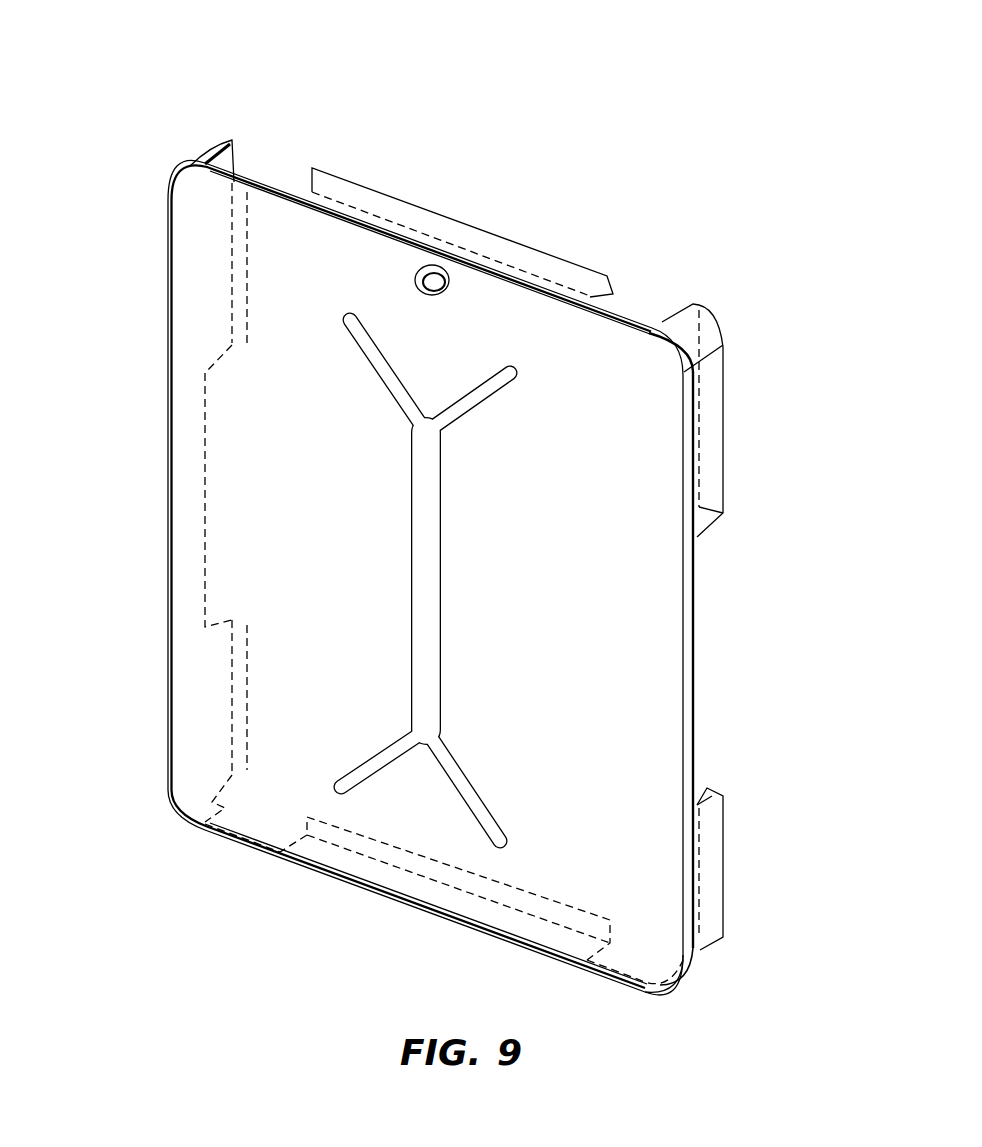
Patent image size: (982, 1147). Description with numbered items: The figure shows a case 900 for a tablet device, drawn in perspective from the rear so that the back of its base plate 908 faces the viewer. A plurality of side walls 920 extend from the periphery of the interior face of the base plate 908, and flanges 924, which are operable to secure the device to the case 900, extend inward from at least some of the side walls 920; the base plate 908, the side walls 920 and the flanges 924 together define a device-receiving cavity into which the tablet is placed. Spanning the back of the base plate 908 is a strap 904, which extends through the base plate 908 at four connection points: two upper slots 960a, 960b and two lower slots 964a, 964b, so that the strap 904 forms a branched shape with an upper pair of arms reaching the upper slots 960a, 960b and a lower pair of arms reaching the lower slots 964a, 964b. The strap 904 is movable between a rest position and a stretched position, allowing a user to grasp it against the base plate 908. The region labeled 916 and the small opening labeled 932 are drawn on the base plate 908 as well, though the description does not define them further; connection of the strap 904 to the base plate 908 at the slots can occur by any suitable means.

The case 900 is at (119, 98).
The strap 904 is at (441, 585).
The base plate 908 is at (724, 428).
The plate face 916 is at (586, 536).
The side walls 920 is at (193, 232).
The flanges 924 is at (250, 322).
The aperture 932 is at (437, 307).
The upper slot 960a is at (350, 321).
The upper slot 960b is at (512, 373).
The lower slot 964a is at (340, 792).
The lower slot 964b is at (497, 843).